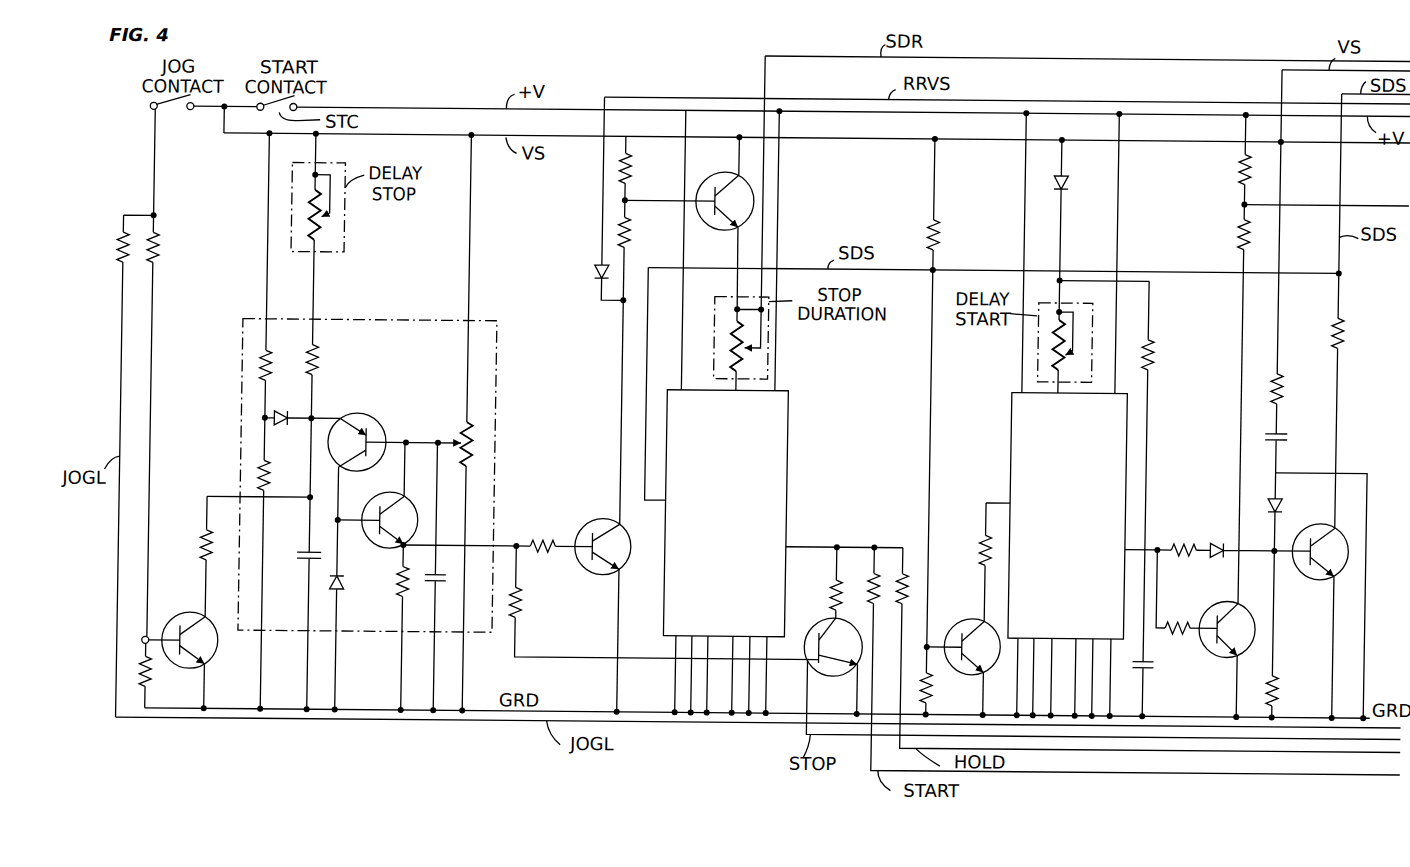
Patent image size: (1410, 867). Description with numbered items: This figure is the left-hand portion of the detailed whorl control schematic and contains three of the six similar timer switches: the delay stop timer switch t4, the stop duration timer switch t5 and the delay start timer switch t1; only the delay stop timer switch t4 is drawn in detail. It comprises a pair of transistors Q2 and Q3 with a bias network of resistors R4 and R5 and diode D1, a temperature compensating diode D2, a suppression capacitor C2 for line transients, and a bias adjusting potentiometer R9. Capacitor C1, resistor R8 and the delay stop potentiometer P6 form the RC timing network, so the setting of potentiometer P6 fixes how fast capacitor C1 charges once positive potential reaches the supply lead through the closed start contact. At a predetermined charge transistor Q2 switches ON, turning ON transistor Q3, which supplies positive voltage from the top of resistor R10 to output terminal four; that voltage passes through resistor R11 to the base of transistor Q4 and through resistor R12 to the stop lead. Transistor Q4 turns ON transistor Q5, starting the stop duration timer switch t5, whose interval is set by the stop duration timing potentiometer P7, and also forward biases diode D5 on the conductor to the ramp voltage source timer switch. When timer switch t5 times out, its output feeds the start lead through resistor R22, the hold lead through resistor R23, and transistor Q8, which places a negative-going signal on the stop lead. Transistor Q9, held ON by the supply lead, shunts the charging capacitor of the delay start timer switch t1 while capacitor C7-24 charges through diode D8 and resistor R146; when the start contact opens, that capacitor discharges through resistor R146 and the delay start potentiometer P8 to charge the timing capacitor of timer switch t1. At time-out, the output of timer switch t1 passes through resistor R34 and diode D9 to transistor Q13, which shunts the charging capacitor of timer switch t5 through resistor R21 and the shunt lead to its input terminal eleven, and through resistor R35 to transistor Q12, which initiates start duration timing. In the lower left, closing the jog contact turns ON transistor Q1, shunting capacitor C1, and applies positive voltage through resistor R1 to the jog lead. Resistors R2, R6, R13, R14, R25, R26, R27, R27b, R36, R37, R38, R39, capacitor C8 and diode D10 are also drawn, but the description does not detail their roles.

The resistor R1 is at (121, 466).
The resistor R2 is at (166, 372).
The transistor Q1 is at (179, 650).
The resistor R6 is at (241, 557).
The delay stop potentiometer P6 is at (348, 238).
The delay stop timer switch t4 is at (422, 304).
The resistor R4 is at (282, 295).
The resistor R5 is at (277, 563).
The diode D1 is at (303, 406).
The resistor R8 is at (327, 449).
The capacitor C1 is at (300, 627).
The transistor Q2 is at (384, 457).
The bias adjusting potentiometer R9 is at (454, 423).
The transistor Q3 is at (378, 495).
The temperature compensating diode D2 is at (353, 616).
The resistor R10 is at (385, 629).
The suppression capacitor C2 is at (423, 579).
The resistor R11 is at (498, 535).
The resistor R12 is at (665, 603).
The transistor Q4 is at (601, 606).
The resistor R13 is at (647, 176).
The resistor R14 is at (644, 370).
The diode D5 is at (596, 198).
The transistor Q5 is at (689, 221).
The stop duration timing potentiometer P7 is at (768, 361).
The stop duration timer switch t5 is at (745, 495).
The resistor R25 is at (953, 391).
The resistor R27 is at (819, 581).
The resistor R27b is at (978, 562).
The resistor R22 is at (1121, 659).
The resistor R23 is at (918, 574).
The transistor Q8 is at (832, 661).
The transistor Q9 is at (962, 664).
The resistor R26 is at (947, 682).
The diode D8 is at (1076, 228).
The delay start potentiometer P8 is at (1040, 350).
The delay start timer switch t1 is at (1088, 497).
The resistor R146 is at (1174, 471).
The capacitor C7-24 is at (1173, 690).
The resistor R34 is at (1182, 541).
The diode D9 is at (1259, 542).
The resistor R35 is at (1187, 592).
The transistor Q12 is at (1227, 650).
The resistor R36 is at (1226, 166).
The resistor R38 is at (1223, 411).
The resistor R37 is at (1300, 252).
The capacitor C8 is at (1290, 462).
The diode D10 is at (1293, 585).
The resistor R39 is at (1292, 698).
The resistor R21 is at (1360, 311).
The transistor Q13 is at (1321, 597).